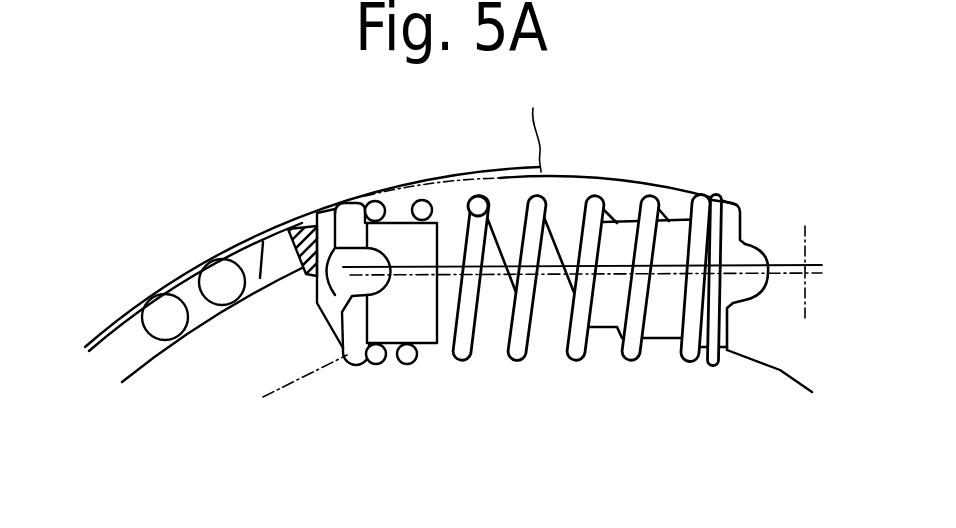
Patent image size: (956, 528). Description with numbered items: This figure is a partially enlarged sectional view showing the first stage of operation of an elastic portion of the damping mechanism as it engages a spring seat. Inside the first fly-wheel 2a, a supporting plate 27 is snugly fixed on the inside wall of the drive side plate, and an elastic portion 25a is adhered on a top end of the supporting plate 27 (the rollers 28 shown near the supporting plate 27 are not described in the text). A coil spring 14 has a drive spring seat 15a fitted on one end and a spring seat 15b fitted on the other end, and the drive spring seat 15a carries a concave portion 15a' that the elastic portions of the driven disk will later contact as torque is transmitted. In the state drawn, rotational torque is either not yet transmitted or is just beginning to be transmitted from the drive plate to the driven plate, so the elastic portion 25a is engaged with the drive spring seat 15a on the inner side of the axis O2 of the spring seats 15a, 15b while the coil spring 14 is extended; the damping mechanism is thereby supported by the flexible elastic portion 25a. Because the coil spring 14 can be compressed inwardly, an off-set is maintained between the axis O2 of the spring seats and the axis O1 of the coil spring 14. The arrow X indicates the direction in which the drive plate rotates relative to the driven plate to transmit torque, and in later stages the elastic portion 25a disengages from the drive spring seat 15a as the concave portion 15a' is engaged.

The first fly-wheel 2a is at (647, 167).
The supporting plate 27 is at (117, 333).
The rollers 28 is at (228, 306).
The elastic portion 25a is at (303, 227).
The drive spring seat 15a is at (354, 231).
The concave portion 15a' is at (379, 398).
The coil spring 14 is at (427, 206).
The spring seat 15b is at (737, 252).
The axis of the coil spring O1 is at (590, 311).
The axis of the spring seats O2 is at (586, 229).
The direction of arrow X is at (192, 195).